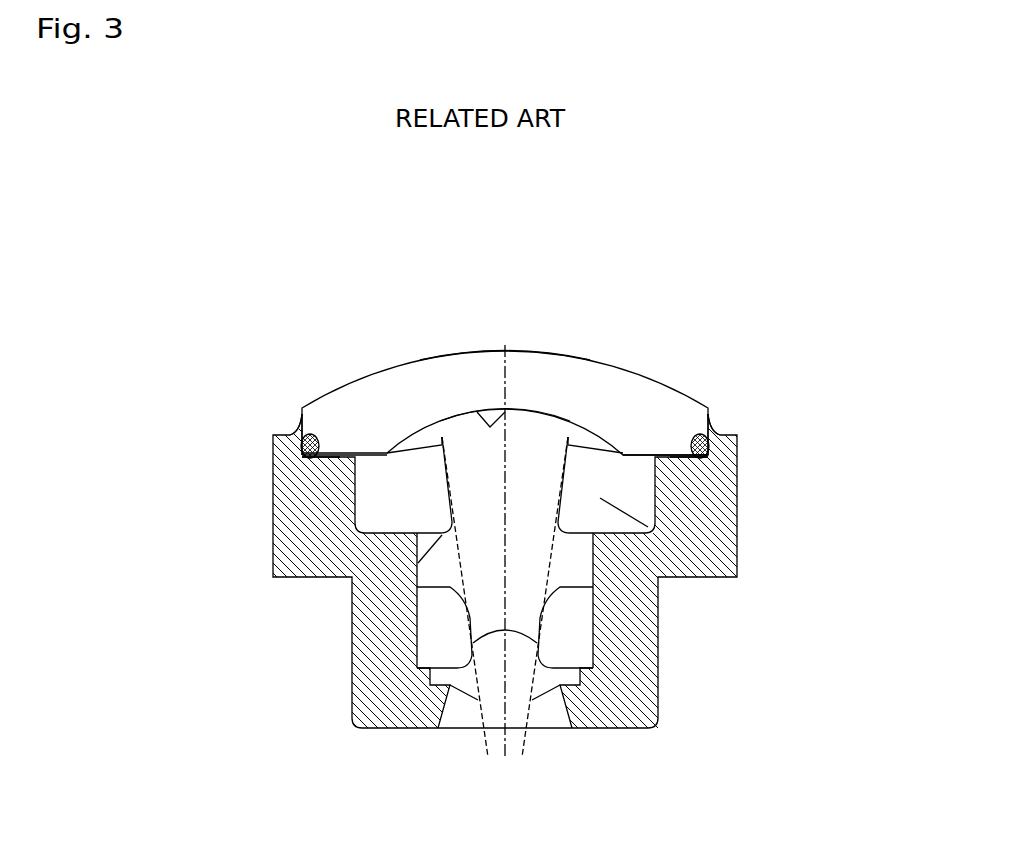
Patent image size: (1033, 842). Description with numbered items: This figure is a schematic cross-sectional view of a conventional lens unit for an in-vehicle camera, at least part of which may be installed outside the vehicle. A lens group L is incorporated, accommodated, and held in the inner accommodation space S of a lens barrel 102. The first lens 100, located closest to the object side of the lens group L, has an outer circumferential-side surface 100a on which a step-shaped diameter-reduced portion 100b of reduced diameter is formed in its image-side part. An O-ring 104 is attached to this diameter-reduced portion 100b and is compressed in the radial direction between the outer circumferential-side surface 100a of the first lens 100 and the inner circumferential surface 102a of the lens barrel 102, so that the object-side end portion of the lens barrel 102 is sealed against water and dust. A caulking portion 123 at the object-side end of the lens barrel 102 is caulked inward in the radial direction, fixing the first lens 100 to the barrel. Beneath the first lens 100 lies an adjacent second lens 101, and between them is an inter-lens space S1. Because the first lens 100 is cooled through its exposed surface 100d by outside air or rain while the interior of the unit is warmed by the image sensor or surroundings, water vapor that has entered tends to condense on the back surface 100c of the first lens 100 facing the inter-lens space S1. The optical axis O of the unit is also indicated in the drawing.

The first lens 100 is at (580, 395).
The outer circumferential-side surface 100a is at (722, 423).
The diameter-reduced portion 100b is at (725, 455).
The back surface 100c is at (506, 409).
The surface 100d is at (531, 350).
The second lens 101 is at (697, 563).
The lens barrel 102 is at (650, 658).
The inner circumferential surface 102a is at (305, 455).
The O-ring 104 is at (303, 441).
The caulking portion 123 is at (718, 412).
The lens group L is at (568, 431).
The optical axis O is at (505, 378).
The inner accommodation space S is at (383, 442).
The inter-lens space S1 is at (440, 535).